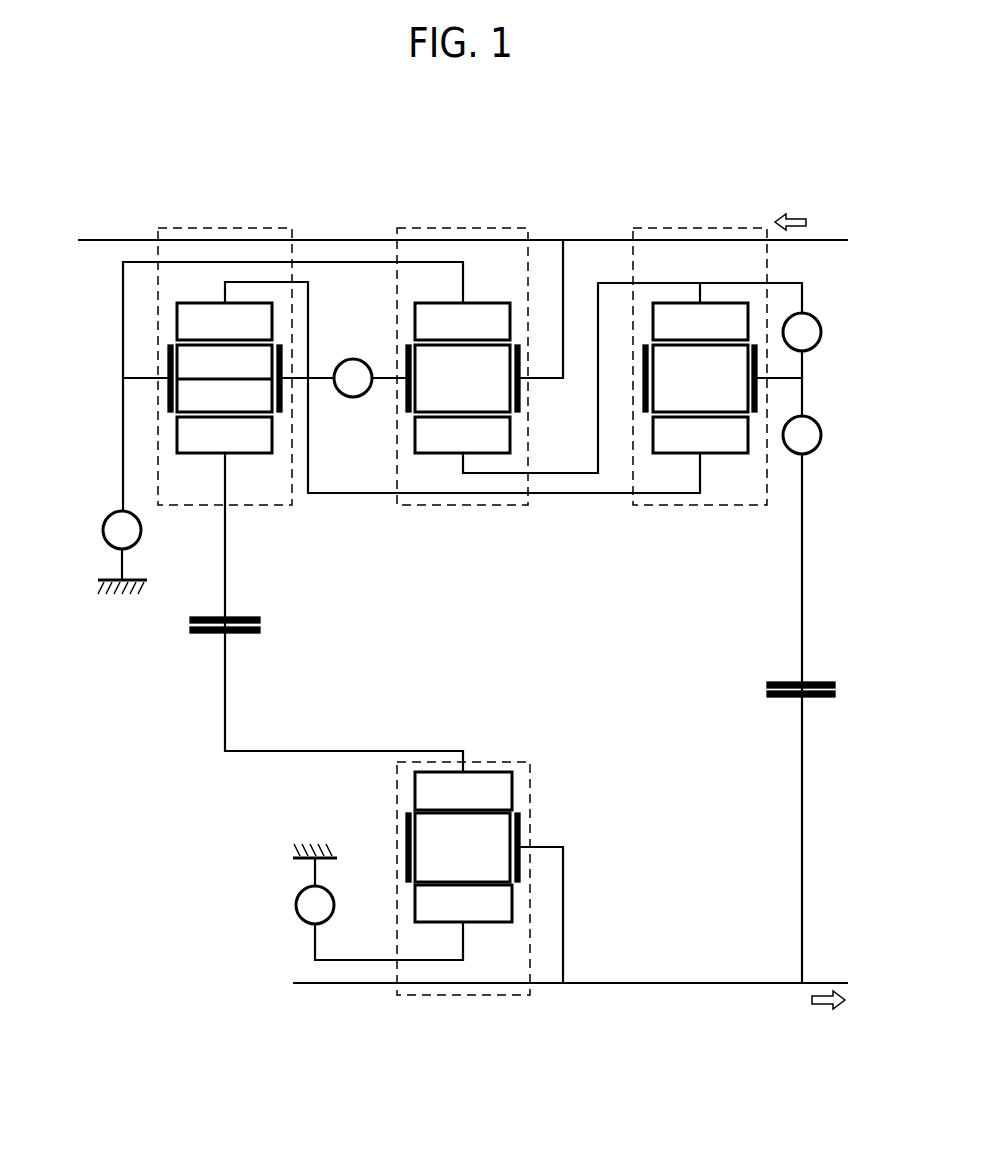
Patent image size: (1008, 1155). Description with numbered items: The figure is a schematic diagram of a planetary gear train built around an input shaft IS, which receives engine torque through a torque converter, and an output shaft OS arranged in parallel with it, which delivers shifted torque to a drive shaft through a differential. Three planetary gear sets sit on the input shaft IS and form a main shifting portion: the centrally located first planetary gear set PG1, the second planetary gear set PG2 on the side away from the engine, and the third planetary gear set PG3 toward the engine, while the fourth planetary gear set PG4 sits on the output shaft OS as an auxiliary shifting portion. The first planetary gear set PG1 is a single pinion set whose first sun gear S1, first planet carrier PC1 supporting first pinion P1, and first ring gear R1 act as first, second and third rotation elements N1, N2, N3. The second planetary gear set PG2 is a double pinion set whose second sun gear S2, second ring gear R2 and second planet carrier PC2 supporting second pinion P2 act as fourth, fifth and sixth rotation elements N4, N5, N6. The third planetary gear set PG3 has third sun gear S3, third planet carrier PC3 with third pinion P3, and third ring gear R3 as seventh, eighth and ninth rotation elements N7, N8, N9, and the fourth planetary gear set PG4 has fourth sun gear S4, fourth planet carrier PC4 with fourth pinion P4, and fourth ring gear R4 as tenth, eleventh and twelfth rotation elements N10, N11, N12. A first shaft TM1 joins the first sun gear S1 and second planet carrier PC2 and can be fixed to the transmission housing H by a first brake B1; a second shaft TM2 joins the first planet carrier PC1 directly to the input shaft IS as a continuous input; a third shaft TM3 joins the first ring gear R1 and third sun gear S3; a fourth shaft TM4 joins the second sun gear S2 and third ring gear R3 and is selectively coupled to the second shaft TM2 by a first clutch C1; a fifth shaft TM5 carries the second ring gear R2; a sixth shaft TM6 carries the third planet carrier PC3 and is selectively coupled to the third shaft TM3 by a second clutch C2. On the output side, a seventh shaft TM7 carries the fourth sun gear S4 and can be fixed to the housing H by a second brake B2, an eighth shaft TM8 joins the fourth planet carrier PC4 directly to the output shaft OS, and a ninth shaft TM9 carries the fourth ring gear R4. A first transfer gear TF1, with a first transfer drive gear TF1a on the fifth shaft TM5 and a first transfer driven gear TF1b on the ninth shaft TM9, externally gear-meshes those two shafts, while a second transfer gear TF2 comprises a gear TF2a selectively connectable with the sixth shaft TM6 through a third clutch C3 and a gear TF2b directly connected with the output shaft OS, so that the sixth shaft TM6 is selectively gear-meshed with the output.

The first planetary gear set PG1 is at (464, 216).
The second planetary gear set PG2 is at (226, 216).
The third planetary gear set PG3 is at (701, 216).
The fourth planetary gear set PG4 is at (463, 1010).
The first rotation element N1 is at (462, 321).
The second rotation element N2 is at (498, 401).
The third rotation element N3 is at (462, 435).
The fourth rotation element N4 is at (224, 321).
The fifth rotation element N5 is at (224, 435).
The sixth rotation element N6 is at (173, 360).
The seventh rotation element N7 is at (700, 321).
The eighth rotation element N8 is at (689, 464).
The ninth rotation element N9 is at (700, 435).
The tenth rotation element N10 is at (463, 903).
The eleventh rotation element N11 is at (430, 818).
The twelfth rotation element N12 is at (463, 791).
The first sun gear S1 is at (462, 321).
The first planet carrier PC1 is at (521, 400).
The first ring gear R1 is at (462, 435).
The second sun gear S2 is at (224, 321).
The second planet carrier PC2 is at (168, 357).
The second ring gear R2 is at (224, 435).
The third sun gear S3 is at (700, 321).
The third planet carrier PC3 is at (645, 413).
The third ring gear R3 is at (700, 435).
The fourth sun gear S4 is at (463, 903).
The fourth planet carrier PC4 is at (406, 820).
The fourth ring gear R4 is at (463, 791).
The first pinion P1 is at (462, 378).
The second pinion P2 is at (224, 378).
The third pinion P3 is at (700, 378).
The fourth pinion P4 is at (462, 847).
The first shaft TM1 is at (333, 250).
The second shaft TM2 is at (556, 268).
The third shaft TM3 is at (567, 490).
The fourth shaft TM4 is at (463, 507).
The fifth shaft TM5 is at (240, 553).
The sixth shaft TM6 is at (812, 366).
The seventh shaft TM7 is at (303, 940).
The eighth shaft TM8 is at (580, 910).
The ninth shaft TM9 is at (339, 742).
The input shaft IS is at (598, 240).
The output shaft OS is at (703, 983).
The first clutch C1 is at (344, 378).
The second clutch C2 is at (802, 332).
The third clutch C3 is at (802, 435).
The first brake B1 is at (122, 545).
The second brake B2 is at (315, 891).
The transmission housing H is at (128, 592).
The first transfer gear TF1 is at (281, 621).
The first transfer drive gear TF1a is at (262, 618).
The first transfer driven gear TF1b is at (262, 631).
The second transfer gear TF2 is at (741, 688).
The second transfer gear TF2a is at (767, 684).
The second transfer gear TF2b is at (767, 695).